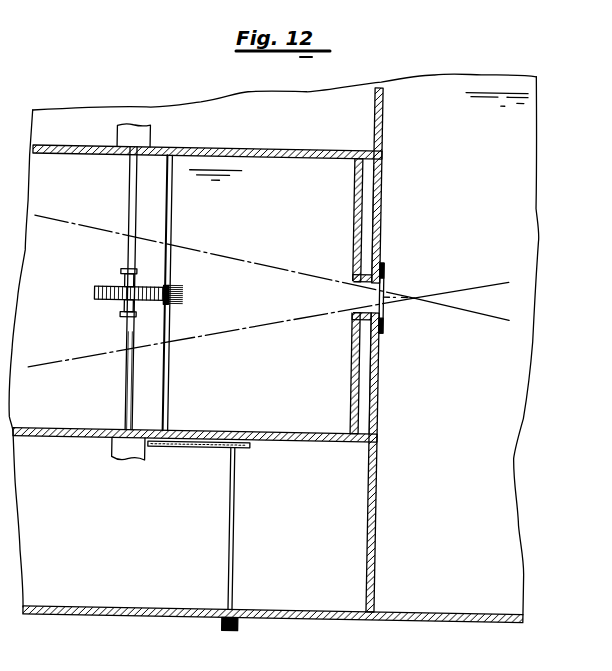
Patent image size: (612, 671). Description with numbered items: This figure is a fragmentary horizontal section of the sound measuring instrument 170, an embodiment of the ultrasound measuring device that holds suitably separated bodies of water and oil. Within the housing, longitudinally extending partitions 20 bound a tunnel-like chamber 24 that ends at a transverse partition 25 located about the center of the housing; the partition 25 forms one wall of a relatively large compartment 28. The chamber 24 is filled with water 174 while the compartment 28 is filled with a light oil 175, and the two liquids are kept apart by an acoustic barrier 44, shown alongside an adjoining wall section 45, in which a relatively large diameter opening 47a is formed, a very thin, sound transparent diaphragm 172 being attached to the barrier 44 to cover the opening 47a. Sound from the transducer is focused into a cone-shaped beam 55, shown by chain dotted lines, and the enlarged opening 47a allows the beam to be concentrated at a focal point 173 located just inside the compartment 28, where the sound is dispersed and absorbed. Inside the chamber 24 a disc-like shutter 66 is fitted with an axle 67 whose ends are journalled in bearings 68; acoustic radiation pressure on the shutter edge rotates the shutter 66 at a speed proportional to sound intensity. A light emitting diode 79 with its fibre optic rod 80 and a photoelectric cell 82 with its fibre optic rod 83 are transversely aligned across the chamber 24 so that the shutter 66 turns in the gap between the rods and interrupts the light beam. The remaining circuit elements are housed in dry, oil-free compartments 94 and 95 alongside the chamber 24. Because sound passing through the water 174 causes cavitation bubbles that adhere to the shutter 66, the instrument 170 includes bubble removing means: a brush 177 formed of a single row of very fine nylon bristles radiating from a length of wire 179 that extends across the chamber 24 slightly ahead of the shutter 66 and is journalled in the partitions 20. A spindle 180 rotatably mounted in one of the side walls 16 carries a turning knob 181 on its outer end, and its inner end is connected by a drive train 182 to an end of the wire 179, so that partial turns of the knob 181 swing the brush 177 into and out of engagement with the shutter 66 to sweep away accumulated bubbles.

The side walls 16 is at (326, 610).
The partitions 20 is at (335, 145).
The chamber 24 is at (270, 176).
The transverse partition 25 is at (384, 112).
The compartment 28 is at (456, 588).
The acoustic barrier 44 is at (380, 234).
The hollow partition 45 is at (371, 186).
The opening 47a is at (356, 301).
The cone-shaped beam of sound 55 is at (194, 247).
The shutter 66 is at (111, 299).
The axle 67 is at (124, 278).
The bearings 68 is at (130, 265).
The light emitting diode 79 is at (118, 134).
The fibre optic rod 80 is at (124, 181).
The photoelectric cell 82 is at (118, 449).
The fibre optic rod 83 is at (129, 378).
The compartment 94 is at (236, 106).
The compartment 95 is at (103, 596).
The sound measuring instrument 170 is at (106, 76).
The diaphragm 172 is at (388, 314).
The focal point 173 is at (417, 291).
The water 174 is at (215, 165).
The light oil 175 is at (499, 82).
The brush 177 is at (188, 289).
The wire 179 is at (176, 363).
The spindle 180 is at (237, 523).
The turning knob 181 is at (241, 626).
The drive train 182 is at (203, 450).